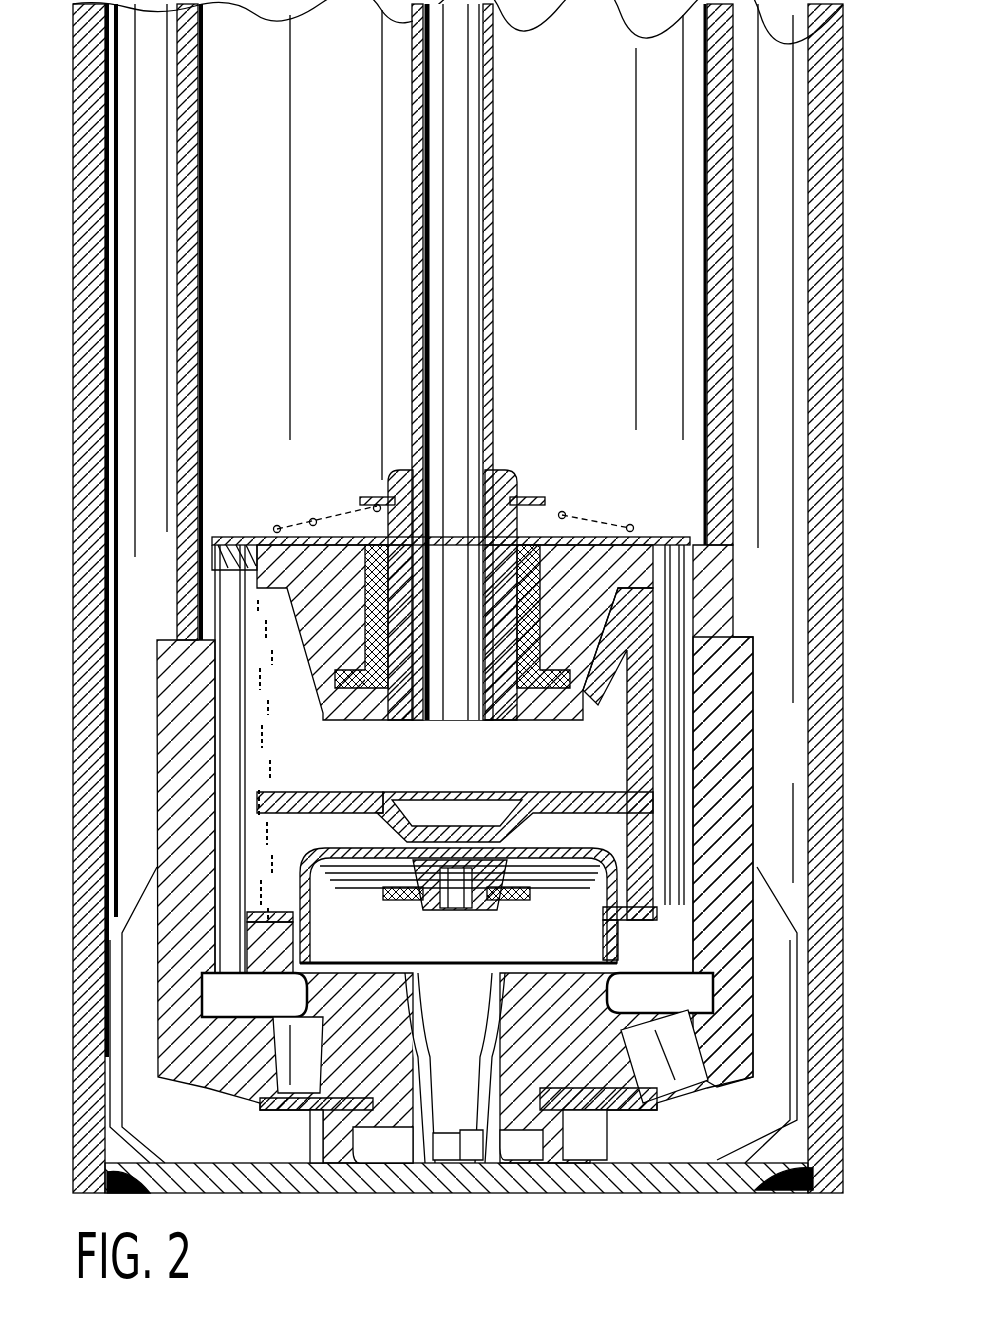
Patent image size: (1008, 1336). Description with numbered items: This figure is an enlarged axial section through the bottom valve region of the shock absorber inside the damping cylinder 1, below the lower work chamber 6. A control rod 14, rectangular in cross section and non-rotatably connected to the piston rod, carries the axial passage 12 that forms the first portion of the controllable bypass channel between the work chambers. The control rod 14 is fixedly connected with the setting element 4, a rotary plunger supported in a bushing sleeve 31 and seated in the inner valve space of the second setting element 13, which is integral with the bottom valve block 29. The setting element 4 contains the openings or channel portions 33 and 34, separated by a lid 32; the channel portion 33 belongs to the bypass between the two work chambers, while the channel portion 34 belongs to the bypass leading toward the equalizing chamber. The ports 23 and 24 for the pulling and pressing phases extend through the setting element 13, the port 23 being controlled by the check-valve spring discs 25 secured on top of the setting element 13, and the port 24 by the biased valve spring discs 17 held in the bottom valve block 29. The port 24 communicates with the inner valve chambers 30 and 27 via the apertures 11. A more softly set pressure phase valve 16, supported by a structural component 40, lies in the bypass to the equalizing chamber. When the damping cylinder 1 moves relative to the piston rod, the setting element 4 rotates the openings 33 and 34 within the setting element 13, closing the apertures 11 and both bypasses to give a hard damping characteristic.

The damping cylinder 1 is at (715, 250).
The lower work chamber 6 is at (603, 97).
The axial passage 12 is at (458, 146).
The control rod 14 is at (490, 209).
The apertures 11 is at (222, 555).
The bushing sleeve 31 is at (380, 535).
The valve spring discs 25 is at (580, 528).
The port 23 is at (678, 565).
The channel portion 33 is at (268, 624).
The setting element 4 is at (657, 612).
The port 24 is at (232, 689).
The inner valve chamber 30 is at (600, 750).
The channel portion 34 is at (288, 830).
The lid 32 is at (376, 806).
The inner valve chamber 27 is at (545, 832).
The second setting element 13 is at (730, 796).
The structural component 40 is at (330, 925).
The bottom valve block 29 is at (560, 1003).
The pressure phase valve 16 is at (568, 884).
The valve spring discs 17 is at (618, 1106).